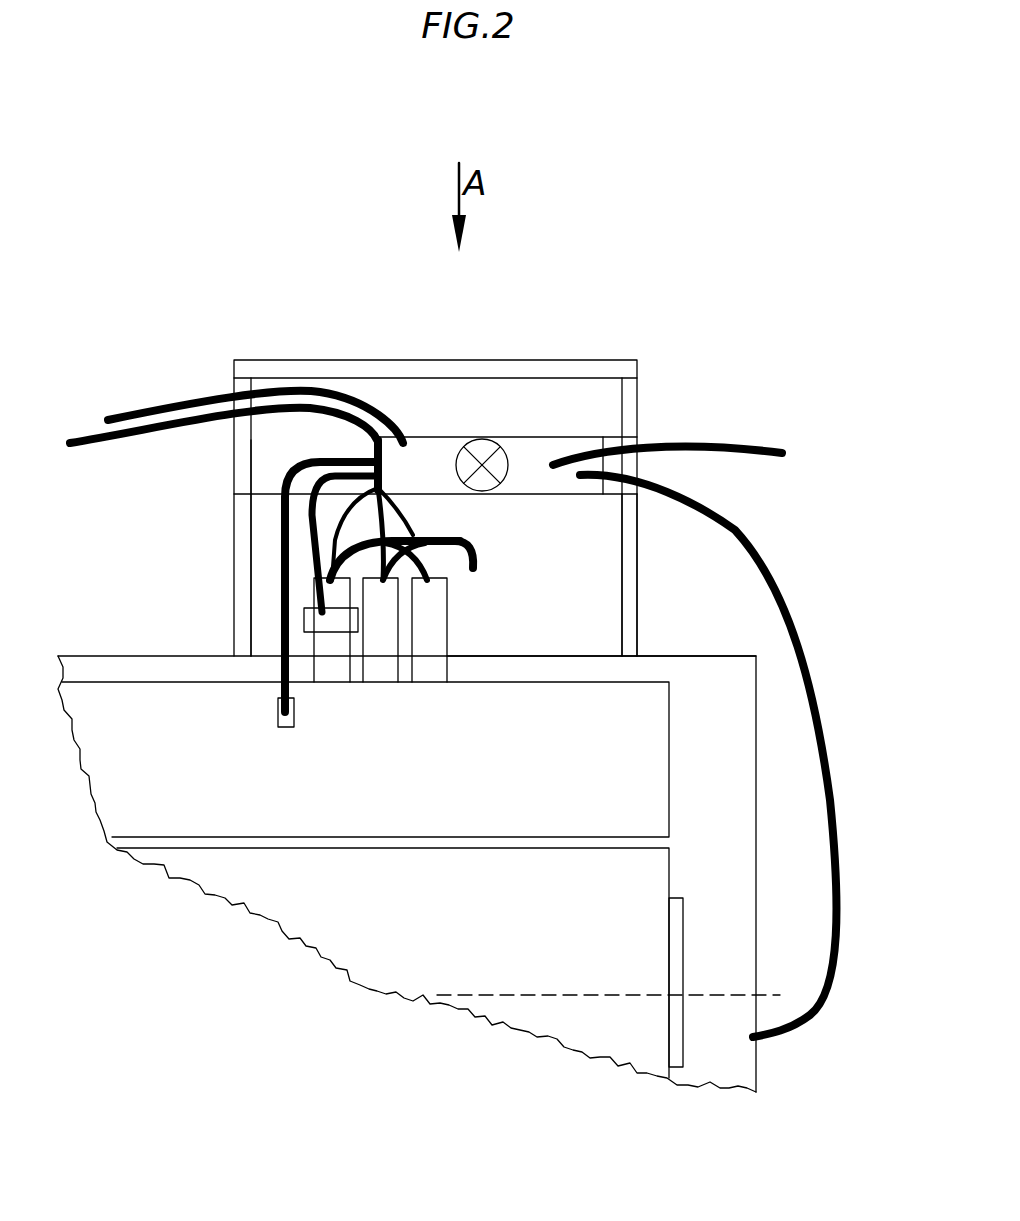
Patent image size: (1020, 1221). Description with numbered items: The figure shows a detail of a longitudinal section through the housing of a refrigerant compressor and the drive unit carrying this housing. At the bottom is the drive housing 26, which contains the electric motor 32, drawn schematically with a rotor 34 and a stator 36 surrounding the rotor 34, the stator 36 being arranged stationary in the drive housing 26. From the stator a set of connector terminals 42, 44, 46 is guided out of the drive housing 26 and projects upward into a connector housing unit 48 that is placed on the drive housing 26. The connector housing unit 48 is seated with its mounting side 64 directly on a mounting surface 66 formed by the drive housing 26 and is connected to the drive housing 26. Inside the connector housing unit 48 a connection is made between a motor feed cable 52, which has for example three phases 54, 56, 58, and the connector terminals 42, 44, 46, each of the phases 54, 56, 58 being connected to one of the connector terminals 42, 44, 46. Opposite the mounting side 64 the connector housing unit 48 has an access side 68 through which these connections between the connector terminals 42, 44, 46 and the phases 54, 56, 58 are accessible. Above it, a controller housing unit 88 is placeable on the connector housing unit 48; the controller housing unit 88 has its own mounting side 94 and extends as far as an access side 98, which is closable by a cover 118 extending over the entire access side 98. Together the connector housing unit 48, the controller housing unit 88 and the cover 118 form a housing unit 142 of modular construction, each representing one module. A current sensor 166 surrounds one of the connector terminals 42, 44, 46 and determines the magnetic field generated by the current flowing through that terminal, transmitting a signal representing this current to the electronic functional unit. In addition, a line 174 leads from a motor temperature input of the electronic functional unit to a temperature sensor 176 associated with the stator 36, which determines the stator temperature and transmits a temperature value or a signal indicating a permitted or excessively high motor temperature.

The drive housing 26 is at (702, 680).
The electric motor 32 is at (702, 850).
The rotor 34 is at (636, 958).
The stator 36 is at (643, 748).
The connector terminal 42 is at (337, 651).
The connector terminal 44 is at (382, 645).
The connector terminal 46 is at (430, 645).
The connector housing unit 48 is at (258, 577).
The motor feed cable 52 is at (477, 540).
The phase 54 is at (318, 560).
The phase 56 is at (420, 580).
The phase 58 is at (450, 560).
The mounting side 64 is at (625, 656).
The mounting surface 66 is at (648, 655).
The access side 68 is at (251, 490).
The controller housing unit 88 is at (603, 410).
The mounting side 94 is at (557, 494).
The access side 98 is at (300, 372).
The cover 118 is at (348, 372).
The housing unit 142 is at (680, 410).
The current sensor 166 is at (304, 620).
The line 174 is at (283, 510).
The temperature sensor 176 is at (280, 715).